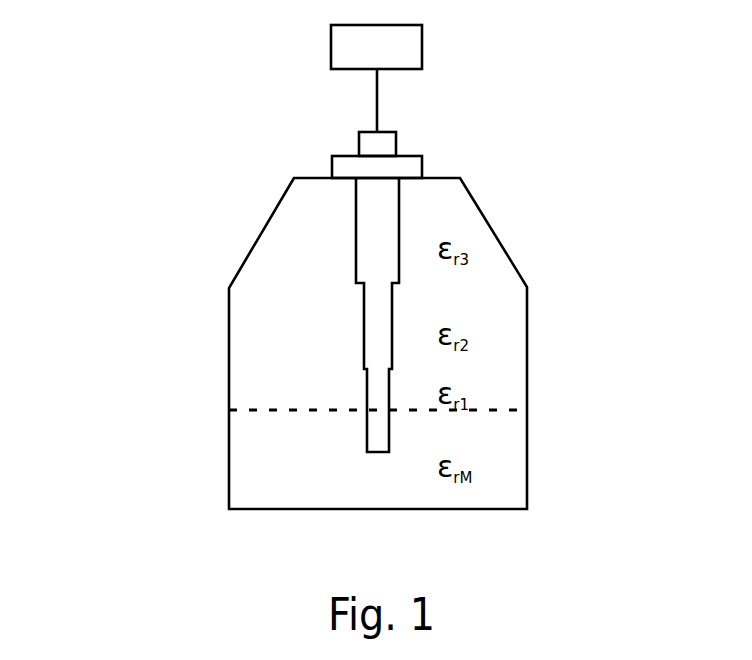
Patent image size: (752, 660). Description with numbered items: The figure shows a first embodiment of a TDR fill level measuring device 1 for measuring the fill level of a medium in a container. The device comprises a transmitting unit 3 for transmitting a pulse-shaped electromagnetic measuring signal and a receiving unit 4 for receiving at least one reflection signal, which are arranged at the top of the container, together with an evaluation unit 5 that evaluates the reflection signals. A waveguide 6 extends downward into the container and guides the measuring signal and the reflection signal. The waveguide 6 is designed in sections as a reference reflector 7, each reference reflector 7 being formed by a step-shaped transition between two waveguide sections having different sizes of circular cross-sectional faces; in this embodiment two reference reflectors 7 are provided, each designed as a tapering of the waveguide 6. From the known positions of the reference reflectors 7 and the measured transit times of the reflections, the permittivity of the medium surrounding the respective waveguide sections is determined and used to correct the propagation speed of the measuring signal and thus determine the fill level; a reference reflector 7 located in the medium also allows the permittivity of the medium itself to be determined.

The TDR fill level measuring device 1 is at (135, 153).
The transmitting unit 3 is at (337, 132).
The receiving unit 4 is at (377, 167).
The evaluation unit 5 is at (413, 45).
The waveguide 6 is at (390, 255).
The reference reflector 7 is at (407, 287).